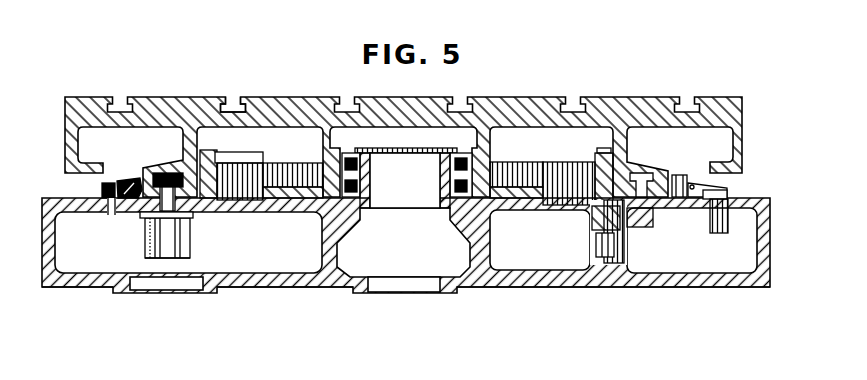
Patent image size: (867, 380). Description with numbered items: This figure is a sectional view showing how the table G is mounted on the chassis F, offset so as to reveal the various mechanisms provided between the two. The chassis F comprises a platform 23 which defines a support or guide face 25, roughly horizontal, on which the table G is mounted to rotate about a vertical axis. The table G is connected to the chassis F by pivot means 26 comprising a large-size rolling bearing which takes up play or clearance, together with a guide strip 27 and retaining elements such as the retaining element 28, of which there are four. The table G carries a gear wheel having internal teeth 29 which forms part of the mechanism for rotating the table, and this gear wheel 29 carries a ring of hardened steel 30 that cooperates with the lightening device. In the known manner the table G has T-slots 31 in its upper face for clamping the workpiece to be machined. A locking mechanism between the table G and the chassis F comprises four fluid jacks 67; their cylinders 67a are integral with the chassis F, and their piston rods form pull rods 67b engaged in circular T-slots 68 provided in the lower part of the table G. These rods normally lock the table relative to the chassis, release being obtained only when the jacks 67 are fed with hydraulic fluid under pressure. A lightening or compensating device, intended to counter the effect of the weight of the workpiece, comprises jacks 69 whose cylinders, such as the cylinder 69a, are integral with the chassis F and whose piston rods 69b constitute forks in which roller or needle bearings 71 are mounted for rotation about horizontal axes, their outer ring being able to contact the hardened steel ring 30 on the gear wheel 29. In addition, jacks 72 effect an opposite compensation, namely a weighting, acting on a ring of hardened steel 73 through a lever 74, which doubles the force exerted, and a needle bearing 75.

The table G is at (542, 100).
The chassis F is at (318, 288).
The platform 23 is at (588, 290).
The support or guide face 25 is at (540, 240).
The pivot means 26 is at (321, 163).
The guide strip 27 is at (130, 210).
The retaining element 28 is at (103, 192).
The gear wheel 29 is at (595, 162).
The ring of hardened steel 30 is at (611, 197).
The T-slots 31 is at (237, 96).
The fluid jacks 67 is at (145, 249).
The cylinders 67a is at (181, 259).
The pull rods 67b is at (192, 217).
The circular T-slots 68 is at (166, 173).
The jacks 69 is at (628, 266).
The cylinder 69a is at (603, 258).
The piston rods 69b is at (618, 232).
The roller or needle bearings 71 is at (590, 224).
The jacks 72 is at (714, 234).
The ring of hardened steel 73 is at (677, 200).
The lever 74 is at (699, 185).
The needle bearing 75 is at (679, 175).